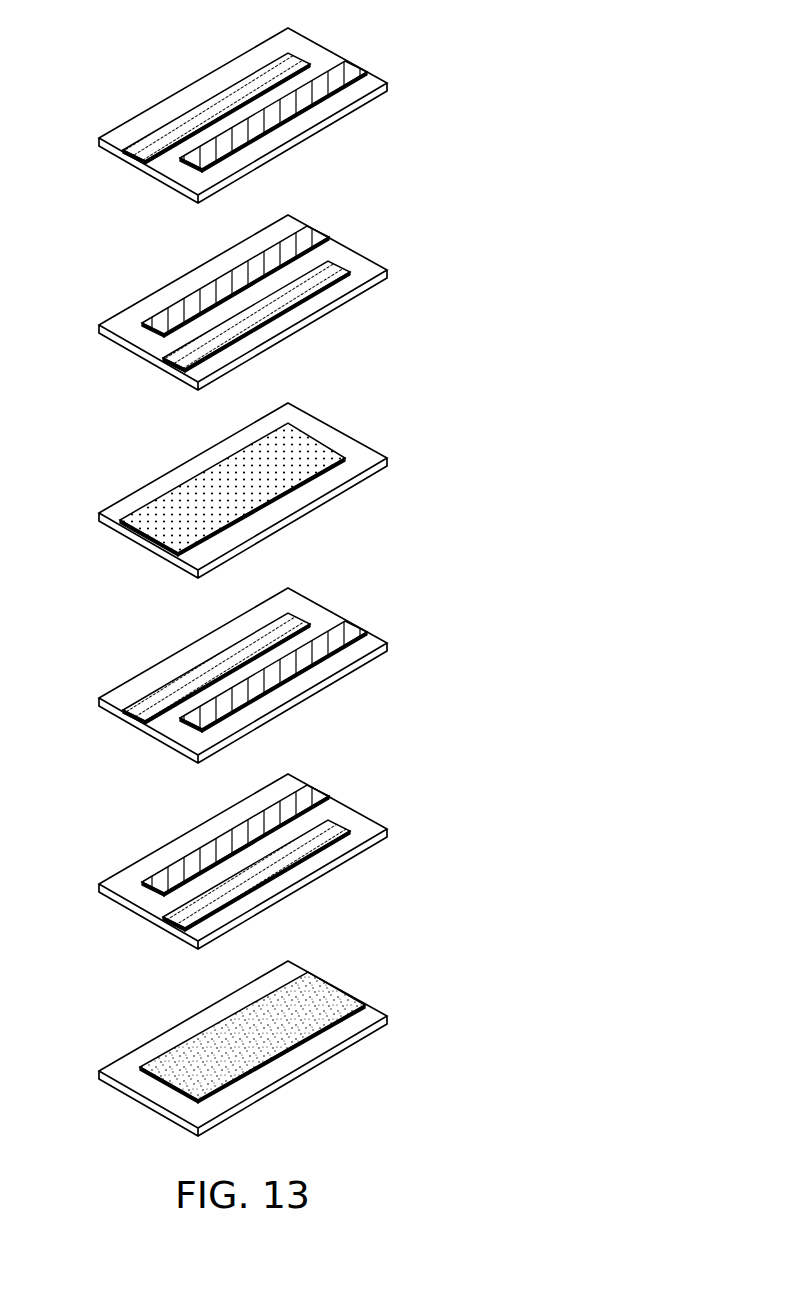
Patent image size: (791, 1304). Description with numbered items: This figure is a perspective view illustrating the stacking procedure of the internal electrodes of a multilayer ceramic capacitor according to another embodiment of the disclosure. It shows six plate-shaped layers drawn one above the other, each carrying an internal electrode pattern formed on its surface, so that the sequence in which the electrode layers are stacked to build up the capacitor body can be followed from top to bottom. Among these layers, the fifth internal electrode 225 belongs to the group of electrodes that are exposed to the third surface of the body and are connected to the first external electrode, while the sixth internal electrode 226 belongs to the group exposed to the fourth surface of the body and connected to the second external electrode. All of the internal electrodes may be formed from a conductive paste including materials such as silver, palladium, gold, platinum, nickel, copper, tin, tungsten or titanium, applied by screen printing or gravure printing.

The fifth internal electrode 225 is at (155, 533).
The sixth internal electrode 226 is at (333, 982).